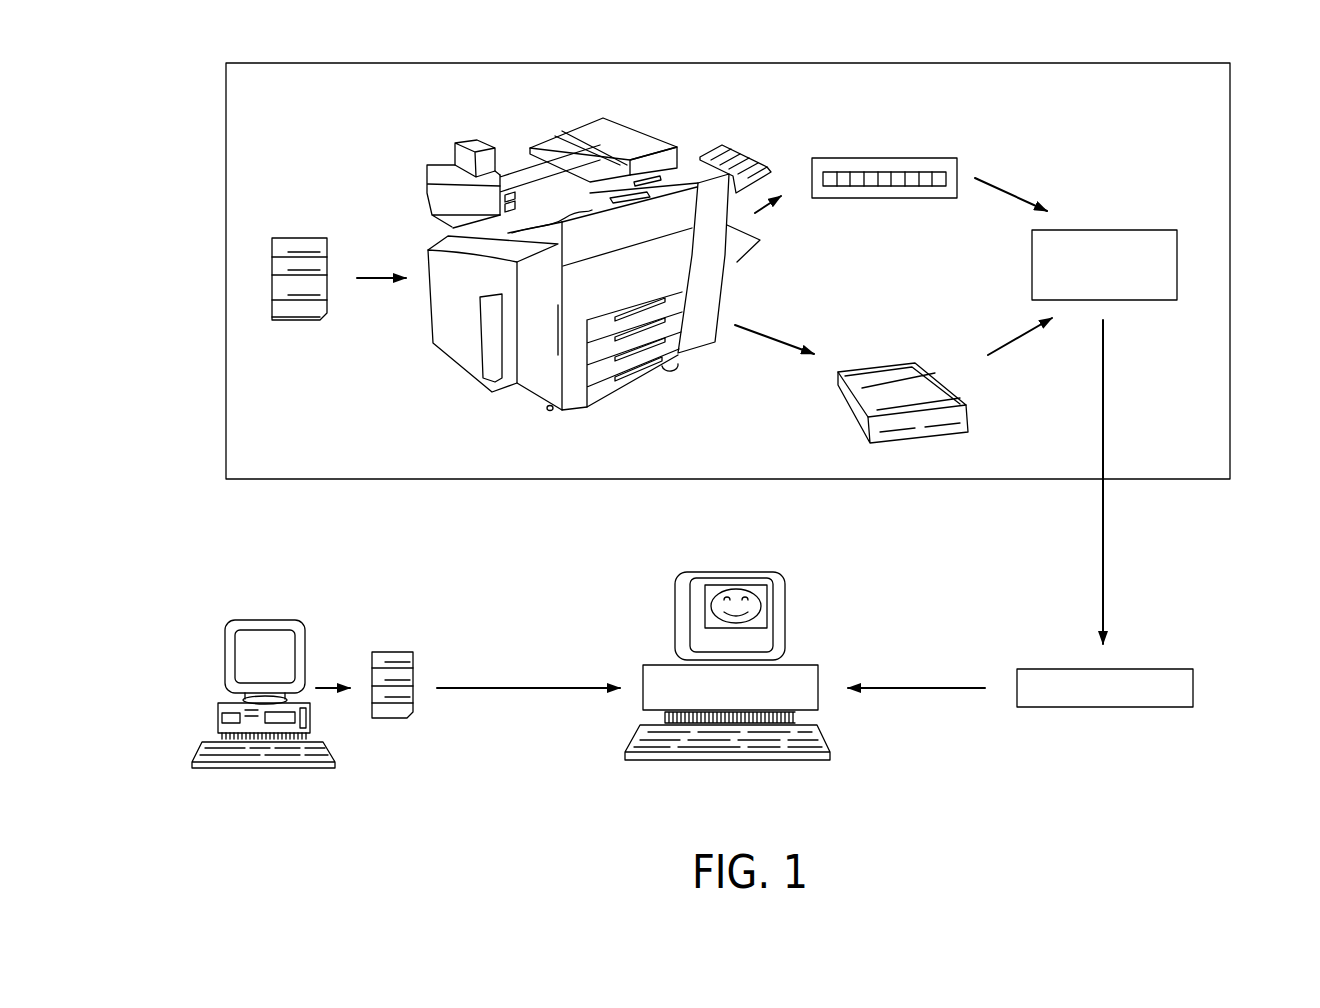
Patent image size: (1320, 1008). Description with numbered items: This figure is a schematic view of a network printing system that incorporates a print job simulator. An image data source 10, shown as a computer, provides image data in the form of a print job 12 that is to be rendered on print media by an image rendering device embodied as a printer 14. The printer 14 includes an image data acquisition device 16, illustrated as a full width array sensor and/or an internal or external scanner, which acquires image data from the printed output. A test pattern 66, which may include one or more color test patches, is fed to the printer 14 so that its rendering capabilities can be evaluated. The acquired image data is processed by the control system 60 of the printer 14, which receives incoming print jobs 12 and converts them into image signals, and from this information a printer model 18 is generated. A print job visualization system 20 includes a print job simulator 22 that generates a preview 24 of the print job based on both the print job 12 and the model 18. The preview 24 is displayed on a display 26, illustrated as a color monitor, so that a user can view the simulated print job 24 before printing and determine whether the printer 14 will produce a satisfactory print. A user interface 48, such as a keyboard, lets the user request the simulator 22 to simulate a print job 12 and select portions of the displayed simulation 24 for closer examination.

The image data source 10 is at (255, 783).
The print job 12 is at (396, 652).
The printer 14 is at (568, 150).
The image data acquisition device 16 is at (906, 134).
The print job model 18 is at (1193, 686).
The print job visualization system 20 is at (767, 702).
The print job simulator 22 is at (819, 697).
The preview 24 is at (706, 612).
The display 26 is at (742, 616).
The user interface 48 is at (686, 759).
The control system 60 is at (1178, 233).
The test pattern 66 is at (296, 237).